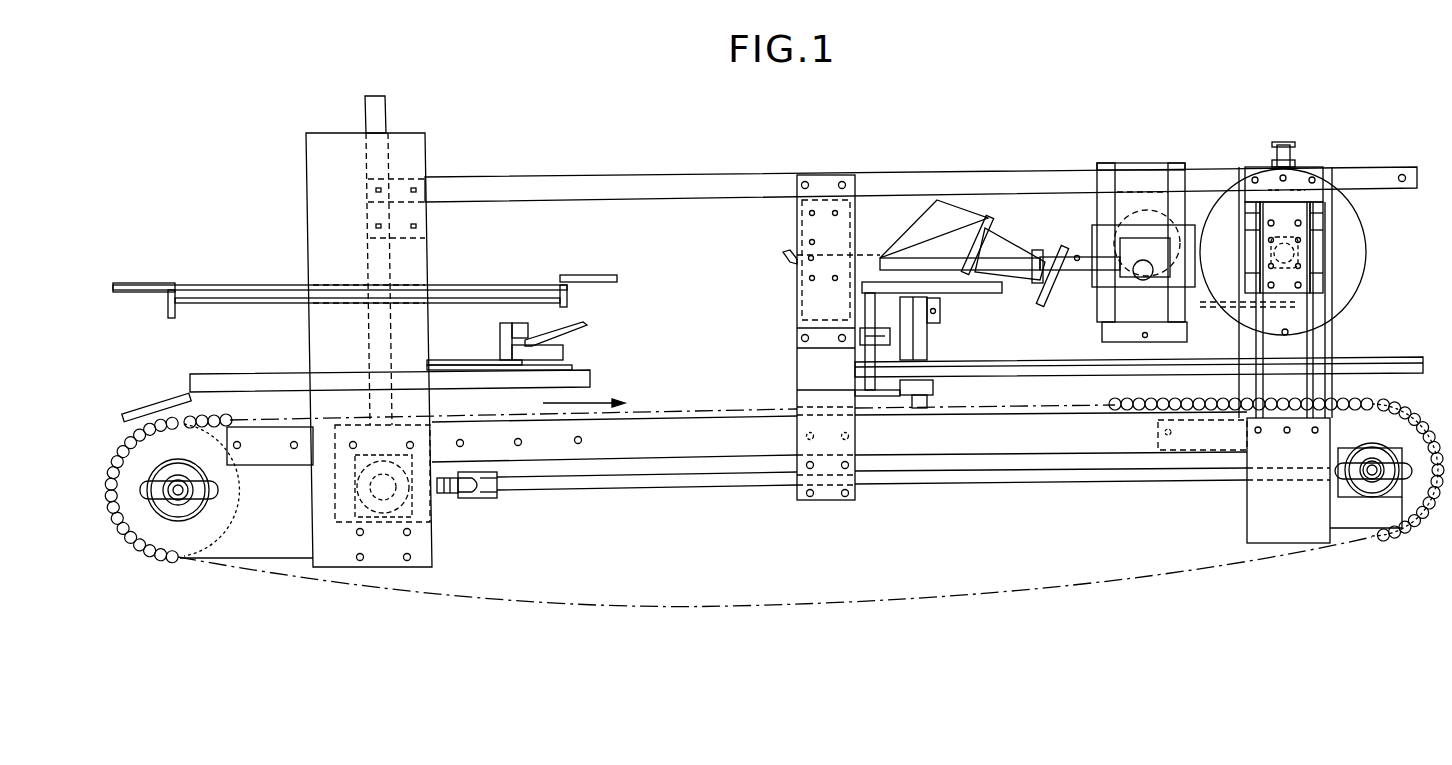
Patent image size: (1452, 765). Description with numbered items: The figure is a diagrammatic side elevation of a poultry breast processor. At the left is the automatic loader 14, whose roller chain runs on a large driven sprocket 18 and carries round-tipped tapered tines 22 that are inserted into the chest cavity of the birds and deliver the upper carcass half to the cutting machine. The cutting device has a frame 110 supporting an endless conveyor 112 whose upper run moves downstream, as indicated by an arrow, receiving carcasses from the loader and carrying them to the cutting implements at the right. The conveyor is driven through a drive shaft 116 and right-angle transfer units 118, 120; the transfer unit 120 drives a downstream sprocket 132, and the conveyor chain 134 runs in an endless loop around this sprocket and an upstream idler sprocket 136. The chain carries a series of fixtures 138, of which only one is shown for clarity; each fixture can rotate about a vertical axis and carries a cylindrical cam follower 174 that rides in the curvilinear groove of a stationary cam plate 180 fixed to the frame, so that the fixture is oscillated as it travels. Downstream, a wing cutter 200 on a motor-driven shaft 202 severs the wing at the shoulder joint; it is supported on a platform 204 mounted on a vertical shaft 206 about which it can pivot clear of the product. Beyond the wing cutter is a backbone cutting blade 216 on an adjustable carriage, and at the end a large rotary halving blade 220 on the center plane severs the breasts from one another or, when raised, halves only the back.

The automatic loader 14 is at (235, 263).
The driven sprocket 18 is at (457, 284).
The tapered tines 22 is at (142, 292).
The frame 110 is at (955, 172).
The endless conveyor 112 is at (836, 603).
The drive shaft 116 is at (533, 490).
The right-angle transfer unit 118 is at (417, 503).
The right-angle transfer unit 120 is at (1406, 528).
The downstream sprocket 132 is at (1378, 523).
The conveyor chain 134 is at (649, 603).
The upstream idler sprocket 136 is at (175, 533).
The fixture 138 is at (577, 345).
The cam follower 174 is at (580, 377).
The stationary cam plate 180 is at (240, 374).
The wing cutter 200 is at (1057, 283).
The motor-driven shaft 202 is at (1036, 255).
The platform 204 is at (893, 256).
The vertical shaft 206 is at (927, 347).
The backbone cutting blade 216 is at (1150, 214).
The rotary halving blade 220 is at (1352, 303).